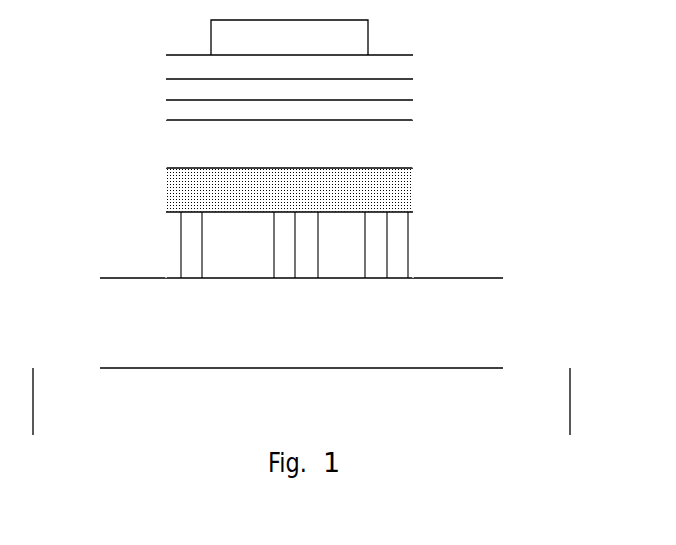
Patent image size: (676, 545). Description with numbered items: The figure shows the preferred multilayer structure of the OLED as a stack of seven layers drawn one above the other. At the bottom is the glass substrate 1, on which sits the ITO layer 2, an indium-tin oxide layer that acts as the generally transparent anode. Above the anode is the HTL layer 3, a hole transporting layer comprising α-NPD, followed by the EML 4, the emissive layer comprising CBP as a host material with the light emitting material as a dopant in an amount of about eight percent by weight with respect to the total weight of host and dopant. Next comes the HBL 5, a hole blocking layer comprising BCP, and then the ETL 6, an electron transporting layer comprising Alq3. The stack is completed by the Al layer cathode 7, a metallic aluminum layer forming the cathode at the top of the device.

The glass substrate 1 is at (301, 401).
The ITO layer 2 is at (301, 323).
The HTL layer 3 is at (289, 245).
The EML 4 is at (289, 190).
The HBL 5 is at (289, 144).
The ETL 6 is at (289, 87).
The Al layer cathode 7 is at (289, 37).